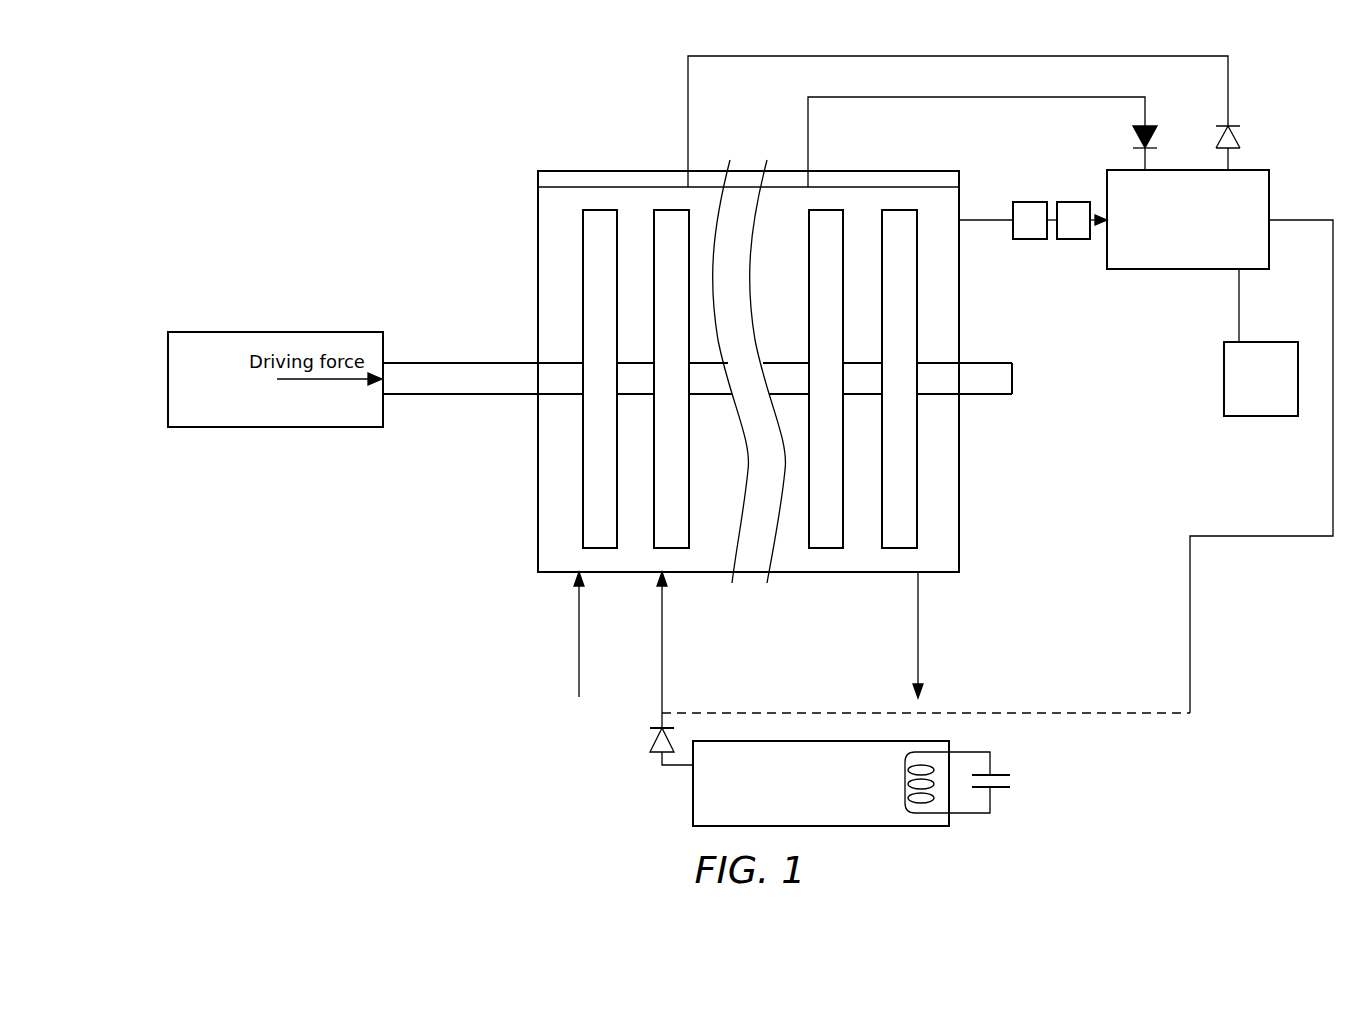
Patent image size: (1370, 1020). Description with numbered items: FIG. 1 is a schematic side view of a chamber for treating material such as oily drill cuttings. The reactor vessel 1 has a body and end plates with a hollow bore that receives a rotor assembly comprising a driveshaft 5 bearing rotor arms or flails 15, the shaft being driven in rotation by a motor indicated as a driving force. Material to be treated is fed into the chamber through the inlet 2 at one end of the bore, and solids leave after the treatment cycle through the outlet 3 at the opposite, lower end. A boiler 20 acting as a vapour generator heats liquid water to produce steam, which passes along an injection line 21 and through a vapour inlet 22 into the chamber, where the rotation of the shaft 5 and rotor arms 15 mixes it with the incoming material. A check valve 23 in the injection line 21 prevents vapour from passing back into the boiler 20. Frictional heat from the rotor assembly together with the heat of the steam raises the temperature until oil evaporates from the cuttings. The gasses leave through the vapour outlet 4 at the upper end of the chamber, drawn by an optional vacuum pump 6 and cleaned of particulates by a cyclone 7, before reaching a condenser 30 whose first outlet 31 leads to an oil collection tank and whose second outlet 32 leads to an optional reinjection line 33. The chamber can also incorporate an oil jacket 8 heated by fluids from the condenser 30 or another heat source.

The reactor vessel 1 is at (871, 187).
The inlet 2 is at (579, 617).
The outlet 3 is at (918, 617).
The vapour outlet 4 is at (991, 220).
The driveshaft 5 is at (1012, 375).
The vacuum pump 6 is at (1030, 239).
The cyclone 7 is at (1073, 239).
The oil jacket 8 is at (551, 171).
The rotor arms 15 is at (654, 272).
The boiler 20 is at (693, 811).
The injection line 21 is at (662, 617).
The vapour inlet 22 is at (660, 575).
The check valve 23 is at (650, 742).
The condenser 30 is at (1186, 170).
The first outlet 31 is at (1239, 305).
The second outlet 32 is at (1310, 220).
The reinjection line 33 is at (1127, 715).